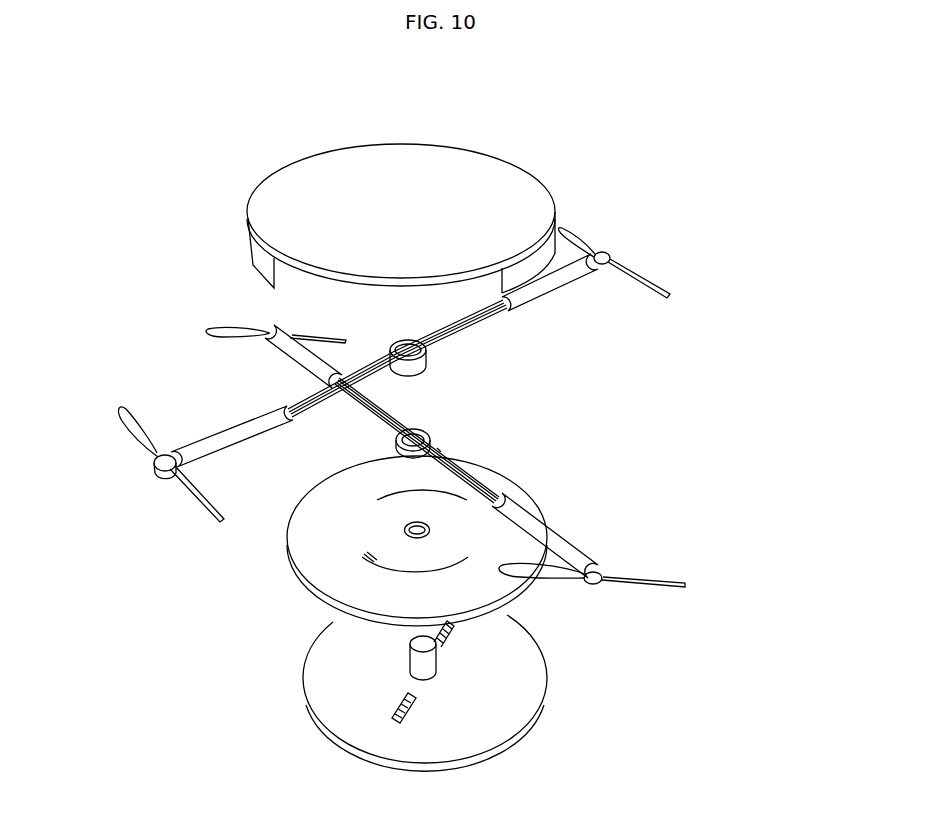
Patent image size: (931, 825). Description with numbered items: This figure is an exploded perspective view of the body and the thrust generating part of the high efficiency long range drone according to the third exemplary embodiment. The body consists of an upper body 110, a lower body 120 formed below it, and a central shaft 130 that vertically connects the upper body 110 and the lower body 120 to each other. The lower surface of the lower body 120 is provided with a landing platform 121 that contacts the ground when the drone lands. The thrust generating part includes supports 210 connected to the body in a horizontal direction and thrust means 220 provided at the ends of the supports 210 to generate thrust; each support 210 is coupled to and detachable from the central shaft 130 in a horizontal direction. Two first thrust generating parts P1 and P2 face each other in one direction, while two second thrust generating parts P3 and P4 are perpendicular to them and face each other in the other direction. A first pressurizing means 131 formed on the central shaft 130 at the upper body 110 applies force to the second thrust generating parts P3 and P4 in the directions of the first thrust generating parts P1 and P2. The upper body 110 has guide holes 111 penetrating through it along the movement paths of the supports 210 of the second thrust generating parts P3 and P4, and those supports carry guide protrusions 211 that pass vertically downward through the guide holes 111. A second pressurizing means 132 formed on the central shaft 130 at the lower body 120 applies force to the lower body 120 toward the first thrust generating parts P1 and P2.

The thrust means 220 is at (610, 256).
The support 210 is at (426, 346).
The guide protrusion 211 is at (380, 418).
The first pressurizing means 131 is at (437, 443).
The upper body 110 is at (480, 532).
The guide hole 111 is at (365, 556).
The central shaft 130 is at (437, 660).
The second pressurizing means 132 is at (412, 657).
The lower body 120 is at (447, 710).
The landing platform 121 is at (390, 708).
The first thrust generating part P1 is at (358, 388).
The first thrust generating part P2 is at (614, 255).
The second thrust generating part P3 is at (592, 591).
The second thrust generating part P4 is at (402, 437).